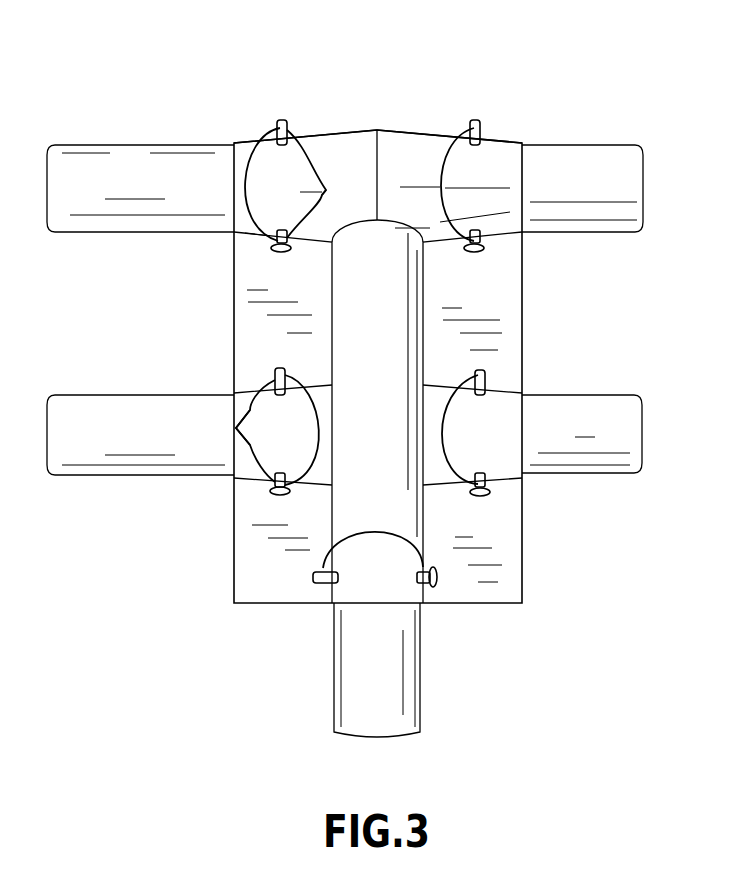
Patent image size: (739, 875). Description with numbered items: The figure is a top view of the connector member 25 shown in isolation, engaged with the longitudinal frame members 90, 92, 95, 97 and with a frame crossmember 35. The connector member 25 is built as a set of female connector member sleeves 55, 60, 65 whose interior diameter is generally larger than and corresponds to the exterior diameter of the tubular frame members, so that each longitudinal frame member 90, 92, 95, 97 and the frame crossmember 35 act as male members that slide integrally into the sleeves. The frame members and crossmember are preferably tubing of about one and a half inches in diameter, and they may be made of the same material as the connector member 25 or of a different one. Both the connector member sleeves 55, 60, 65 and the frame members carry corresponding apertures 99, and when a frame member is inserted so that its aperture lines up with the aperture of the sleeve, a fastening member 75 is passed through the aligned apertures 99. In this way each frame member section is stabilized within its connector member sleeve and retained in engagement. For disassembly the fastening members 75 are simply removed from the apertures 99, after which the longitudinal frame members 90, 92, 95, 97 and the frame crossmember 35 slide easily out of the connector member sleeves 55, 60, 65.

The connector member 25 is at (387, 99).
The frame crossmember 35 is at (393, 677).
The connector member sleeve 55 is at (242, 589).
The connector member sleeve 60 is at (336, 137).
The connector member sleeve 65 is at (275, 488).
The fastening member 75 is at (276, 127).
The longitudinal frame member 90 is at (138, 163).
The longitudinal frame member 92 is at (138, 405).
The longitudinal frame member 95 is at (597, 153).
The longitudinal frame member 97 is at (598, 402).
The aperture 99 is at (327, 191).